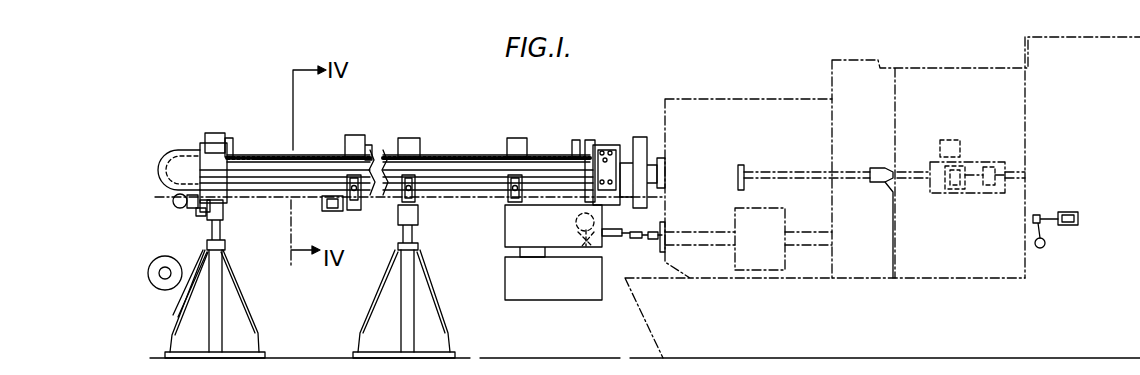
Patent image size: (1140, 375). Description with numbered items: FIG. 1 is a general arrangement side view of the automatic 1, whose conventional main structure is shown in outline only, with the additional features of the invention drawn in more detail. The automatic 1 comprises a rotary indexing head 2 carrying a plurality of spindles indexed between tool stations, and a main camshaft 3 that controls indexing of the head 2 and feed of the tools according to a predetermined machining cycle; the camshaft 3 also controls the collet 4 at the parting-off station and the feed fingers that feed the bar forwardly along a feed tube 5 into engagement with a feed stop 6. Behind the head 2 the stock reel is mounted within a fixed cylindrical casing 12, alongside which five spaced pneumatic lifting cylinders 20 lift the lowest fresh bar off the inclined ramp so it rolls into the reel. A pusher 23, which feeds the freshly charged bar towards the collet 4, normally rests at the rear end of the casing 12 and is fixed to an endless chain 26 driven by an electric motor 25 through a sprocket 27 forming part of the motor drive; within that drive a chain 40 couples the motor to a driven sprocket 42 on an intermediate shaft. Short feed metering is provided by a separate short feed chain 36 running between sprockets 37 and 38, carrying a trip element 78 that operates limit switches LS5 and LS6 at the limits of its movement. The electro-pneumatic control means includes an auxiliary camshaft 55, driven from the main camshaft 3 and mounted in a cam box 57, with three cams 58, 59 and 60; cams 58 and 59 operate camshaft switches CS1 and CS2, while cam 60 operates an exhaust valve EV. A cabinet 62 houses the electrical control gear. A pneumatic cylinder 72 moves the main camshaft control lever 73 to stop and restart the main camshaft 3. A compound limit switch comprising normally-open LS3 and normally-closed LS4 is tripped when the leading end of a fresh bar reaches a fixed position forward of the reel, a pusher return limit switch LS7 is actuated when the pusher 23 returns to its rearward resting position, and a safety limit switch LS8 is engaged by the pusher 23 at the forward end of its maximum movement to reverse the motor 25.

The automatic 1 is at (704, 112).
The rotary indexing head 2 is at (866, 92).
The main camshaft 3 is at (767, 258).
The collet 4 is at (890, 174).
The feed tube 5 is at (775, 176).
The feed stop 6 is at (948, 188).
The fixed cylindrical casing 12 is at (462, 148).
The pneumatic lifting cylinders 20 is at (412, 196).
The pusher 23 is at (212, 160).
The electric motor 25 is at (163, 289).
The endless chain 26 is at (328, 148).
The sprocket 27 is at (178, 158).
The short feed chain 36 is at (296, 280).
The sprocket 37 is at (191, 206).
The sprocket 38 is at (351, 212).
The chain 40 is at (222, 276).
The driven sprocket 42 is at (188, 172).
The auxiliary camshaft 55 is at (598, 244).
The cam box 57 is at (515, 237).
The cam 58 is at (585, 243).
The cam 59 is at (612, 240).
The cam 60 is at (574, 237).
The cabinet 62 is at (538, 288).
The pneumatic cylinder 72 is at (1076, 213).
The main camshaft control lever 73 is at (1040, 215).
The trip element 78 is at (210, 207).
The limit switch LS3 is at (697, 159).
The limit switch LS4 is at (654, 176).
The limit switch LS5 is at (204, 214).
The limit switch LS6 is at (335, 211).
The pusher return limit switch LS7 is at (232, 148).
The safety limit switch LS8 is at (578, 146).
The camshaft switch CS1 is at (604, 224).
The camshaft switch CS2 is at (576, 219).
The exhaust valve EV is at (578, 227).